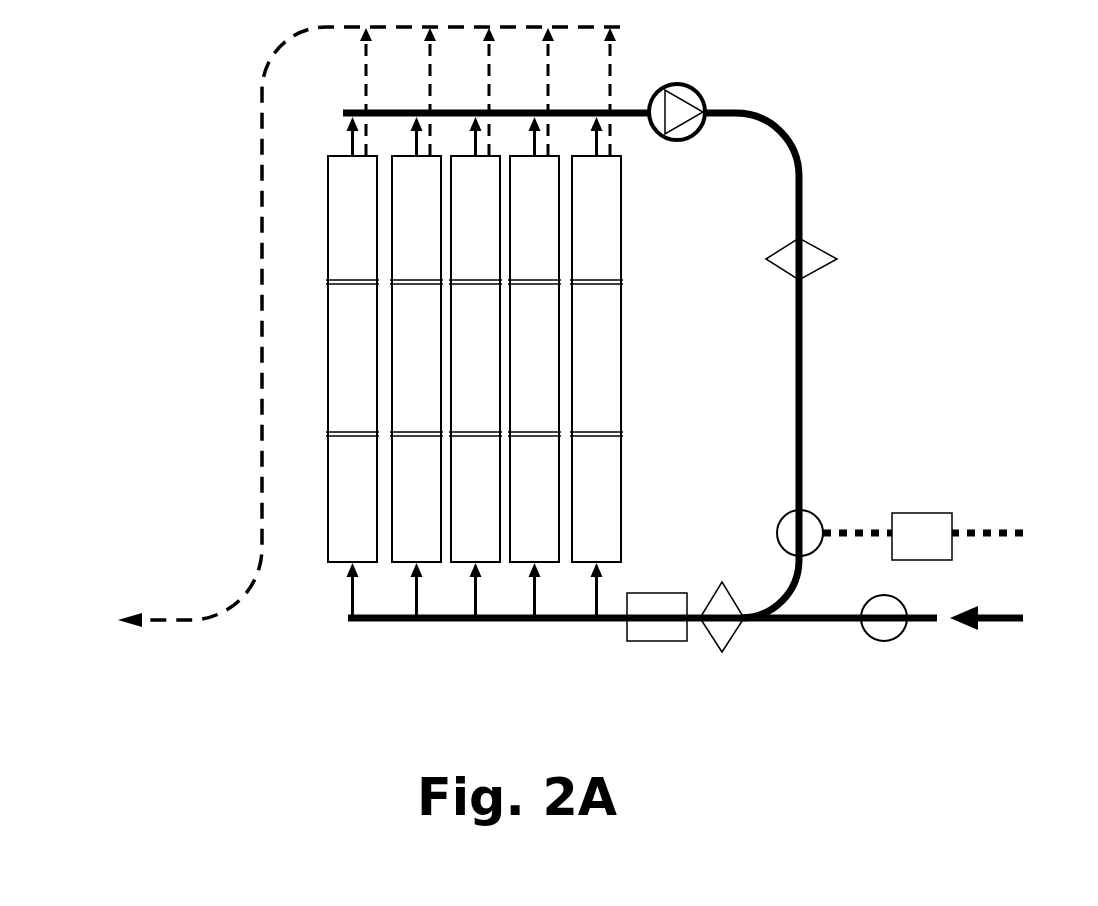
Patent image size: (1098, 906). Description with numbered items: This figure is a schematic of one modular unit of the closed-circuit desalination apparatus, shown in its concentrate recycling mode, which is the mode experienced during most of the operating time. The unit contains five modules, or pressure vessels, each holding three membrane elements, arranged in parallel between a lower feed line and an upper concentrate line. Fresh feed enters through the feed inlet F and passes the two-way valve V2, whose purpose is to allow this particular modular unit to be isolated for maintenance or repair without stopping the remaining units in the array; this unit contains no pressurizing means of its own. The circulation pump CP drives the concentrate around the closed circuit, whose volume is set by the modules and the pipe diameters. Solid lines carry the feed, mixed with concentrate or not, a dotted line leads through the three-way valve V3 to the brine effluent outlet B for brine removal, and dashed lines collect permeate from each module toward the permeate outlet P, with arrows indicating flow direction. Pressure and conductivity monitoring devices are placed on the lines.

The circulation pump CP is at (677, 134).
The two-way valve V2 is at (884, 644).
The three-way valve V3 is at (770, 531).
The feed inlet F is at (1018, 616).
The brine effluent outlet B is at (954, 533).
The permeate outlet P is at (349, 339).